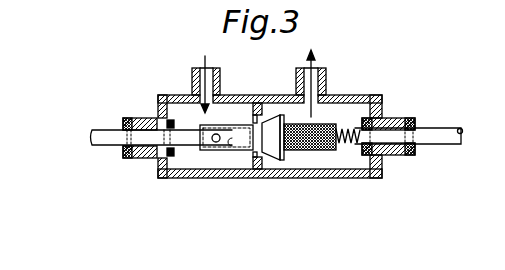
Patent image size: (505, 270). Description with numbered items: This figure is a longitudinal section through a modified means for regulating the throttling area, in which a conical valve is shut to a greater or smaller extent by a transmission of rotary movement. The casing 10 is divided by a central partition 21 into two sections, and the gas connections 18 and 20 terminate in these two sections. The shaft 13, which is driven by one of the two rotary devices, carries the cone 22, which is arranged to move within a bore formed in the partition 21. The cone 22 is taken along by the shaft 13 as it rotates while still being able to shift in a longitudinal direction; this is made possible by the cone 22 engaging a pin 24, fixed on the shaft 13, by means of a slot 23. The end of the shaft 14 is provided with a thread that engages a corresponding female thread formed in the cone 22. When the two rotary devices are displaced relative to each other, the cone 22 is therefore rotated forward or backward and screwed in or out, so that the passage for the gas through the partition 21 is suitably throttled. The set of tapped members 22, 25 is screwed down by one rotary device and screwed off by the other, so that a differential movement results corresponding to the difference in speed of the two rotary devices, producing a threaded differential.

The casing 10 is at (338, 177).
The shaft 13 is at (105, 138).
The shaft 14 is at (445, 131).
The gas connection 18 is at (194, 80).
The gas connection 20 is at (317, 82).
The central partition 21 is at (265, 158).
The cone 22 is at (268, 127).
The slot 23 is at (232, 150).
The pin 24 is at (200, 141).
The tapped member 25 is at (348, 130).